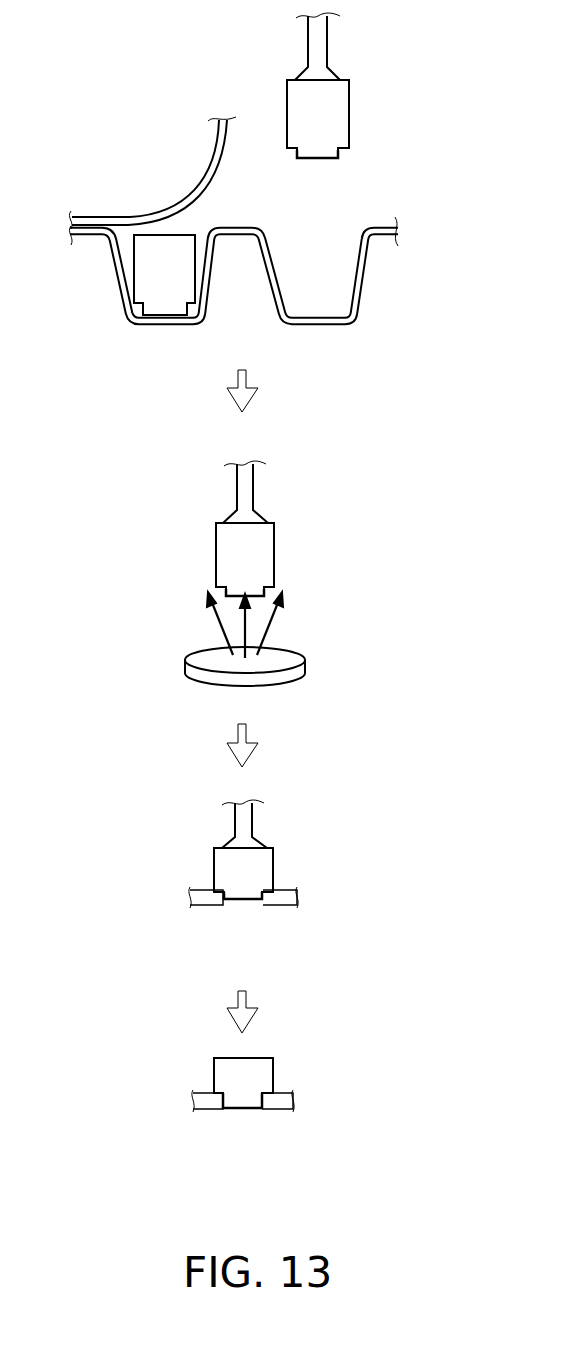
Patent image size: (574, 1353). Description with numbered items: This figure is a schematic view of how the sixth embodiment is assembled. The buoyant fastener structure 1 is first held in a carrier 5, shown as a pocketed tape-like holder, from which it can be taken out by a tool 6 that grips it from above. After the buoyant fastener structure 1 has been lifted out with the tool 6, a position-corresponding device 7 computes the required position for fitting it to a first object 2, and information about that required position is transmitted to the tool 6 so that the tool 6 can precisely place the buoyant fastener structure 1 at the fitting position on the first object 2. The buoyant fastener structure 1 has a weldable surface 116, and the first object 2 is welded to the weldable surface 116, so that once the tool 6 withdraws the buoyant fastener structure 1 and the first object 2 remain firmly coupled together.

The buoyant fastener structure 1 is at (380, 104).
The first object 2 is at (207, 907).
The carrier 5 is at (137, 326).
The tool 6 is at (327, 34).
The position-corresponding device 7 is at (283, 656).
The weldable surface 116 is at (339, 152).